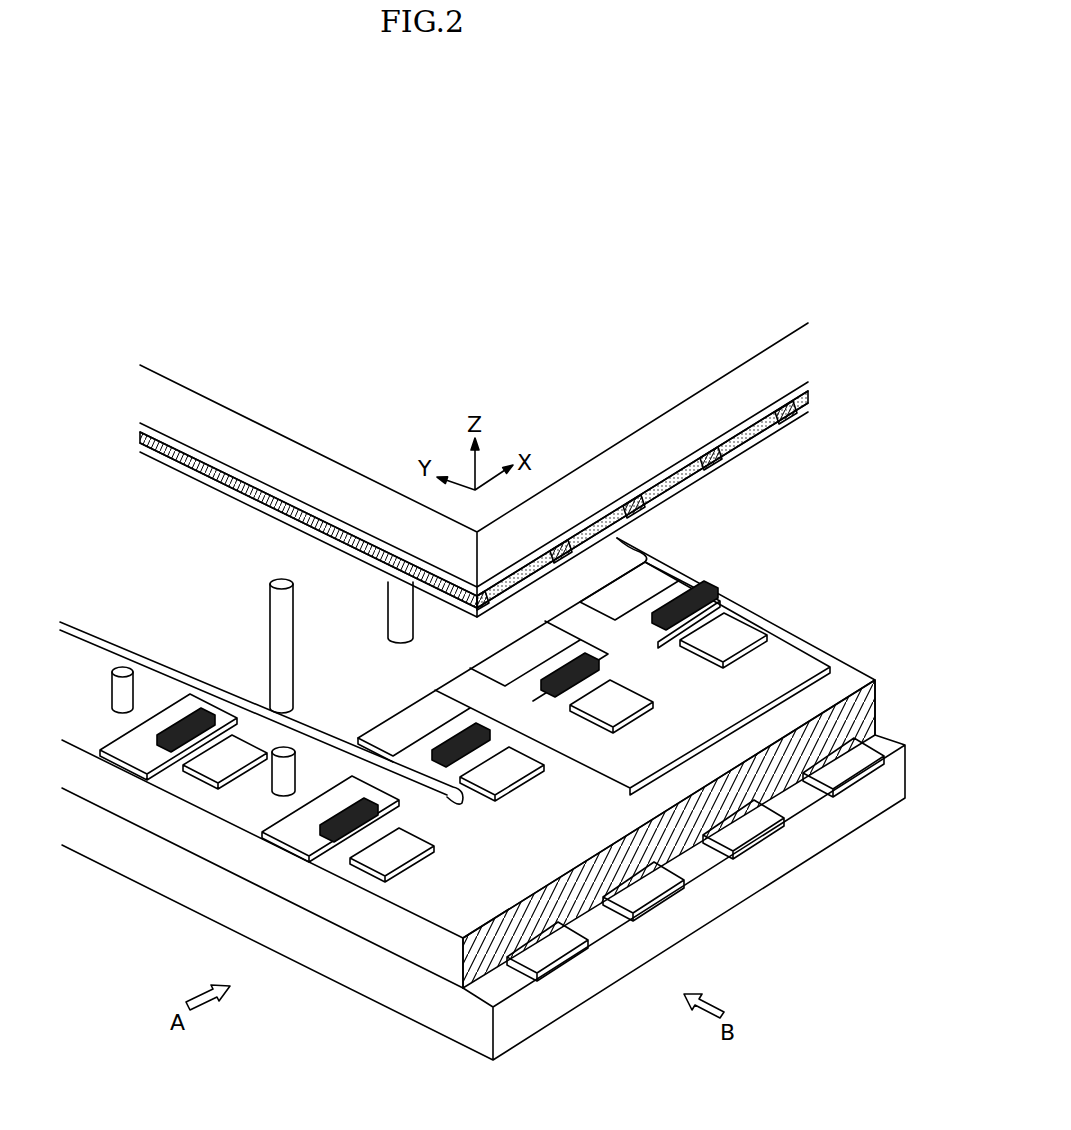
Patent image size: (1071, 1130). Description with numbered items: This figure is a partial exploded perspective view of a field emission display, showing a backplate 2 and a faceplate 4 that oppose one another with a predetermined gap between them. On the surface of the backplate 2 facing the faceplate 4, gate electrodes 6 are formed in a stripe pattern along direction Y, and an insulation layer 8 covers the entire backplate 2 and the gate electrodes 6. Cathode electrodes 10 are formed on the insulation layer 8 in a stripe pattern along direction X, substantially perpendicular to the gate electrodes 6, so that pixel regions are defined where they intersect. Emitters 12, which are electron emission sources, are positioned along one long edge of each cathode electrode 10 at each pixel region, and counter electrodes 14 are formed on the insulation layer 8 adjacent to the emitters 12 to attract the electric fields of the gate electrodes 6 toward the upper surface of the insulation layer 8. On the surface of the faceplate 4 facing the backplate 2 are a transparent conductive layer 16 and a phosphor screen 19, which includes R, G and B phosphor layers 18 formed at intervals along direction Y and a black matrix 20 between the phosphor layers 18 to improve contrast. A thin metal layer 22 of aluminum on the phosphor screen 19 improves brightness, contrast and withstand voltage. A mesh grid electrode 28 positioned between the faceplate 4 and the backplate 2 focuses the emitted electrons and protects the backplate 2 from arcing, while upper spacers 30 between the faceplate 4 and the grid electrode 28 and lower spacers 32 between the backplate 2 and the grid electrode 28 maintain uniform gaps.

The backplate 2 is at (125, 866).
The faceplate 4 is at (230, 417).
The gate electrodes 6 is at (750, 837).
The insulation layer 8 is at (877, 702).
The cathode electrodes 10 is at (288, 833).
The emitters 12 is at (160, 752).
The counter electrodes 14 is at (757, 621).
The transparent conductive layer 16 is at (240, 474).
The R, G, and B phosphor layers 18 is at (753, 457).
The phosphor screen 19 is at (780, 436).
The black matrix 20 is at (705, 457).
The thin metal layer 22 is at (167, 460).
The mesh grid electrode 28 is at (400, 720).
The upper spacers 30 is at (278, 605).
The lower spacers 32 is at (112, 672).